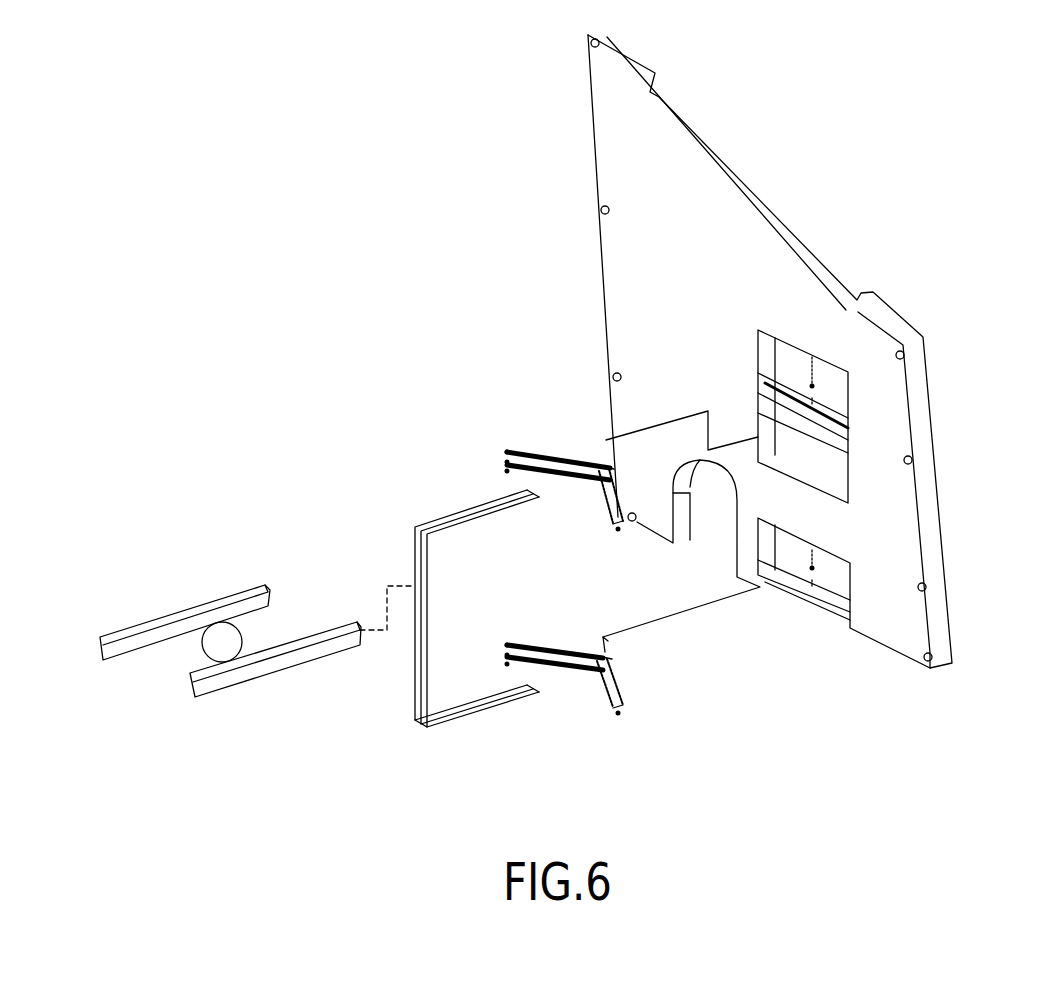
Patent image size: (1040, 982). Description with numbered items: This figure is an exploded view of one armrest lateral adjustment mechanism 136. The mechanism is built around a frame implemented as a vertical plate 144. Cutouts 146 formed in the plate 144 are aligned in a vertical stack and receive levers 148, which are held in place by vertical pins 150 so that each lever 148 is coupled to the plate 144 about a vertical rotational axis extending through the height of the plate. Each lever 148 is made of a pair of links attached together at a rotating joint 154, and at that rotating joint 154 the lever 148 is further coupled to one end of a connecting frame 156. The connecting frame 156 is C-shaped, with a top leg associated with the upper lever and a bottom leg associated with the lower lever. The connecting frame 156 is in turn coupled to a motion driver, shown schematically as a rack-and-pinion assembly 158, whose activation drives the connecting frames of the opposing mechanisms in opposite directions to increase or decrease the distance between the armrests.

The lateral adjustment mechanism 136 is at (782, 150).
The vertical plate 144 is at (793, 268).
The cutouts 146 is at (838, 388).
The lever 148 is at (617, 678).
The vertical pin 150 is at (613, 512).
The rotating joint 154 is at (600, 455).
The connecting frame 156 is at (552, 460).
The rack-and-pinion assembly 158 is at (184, 592).